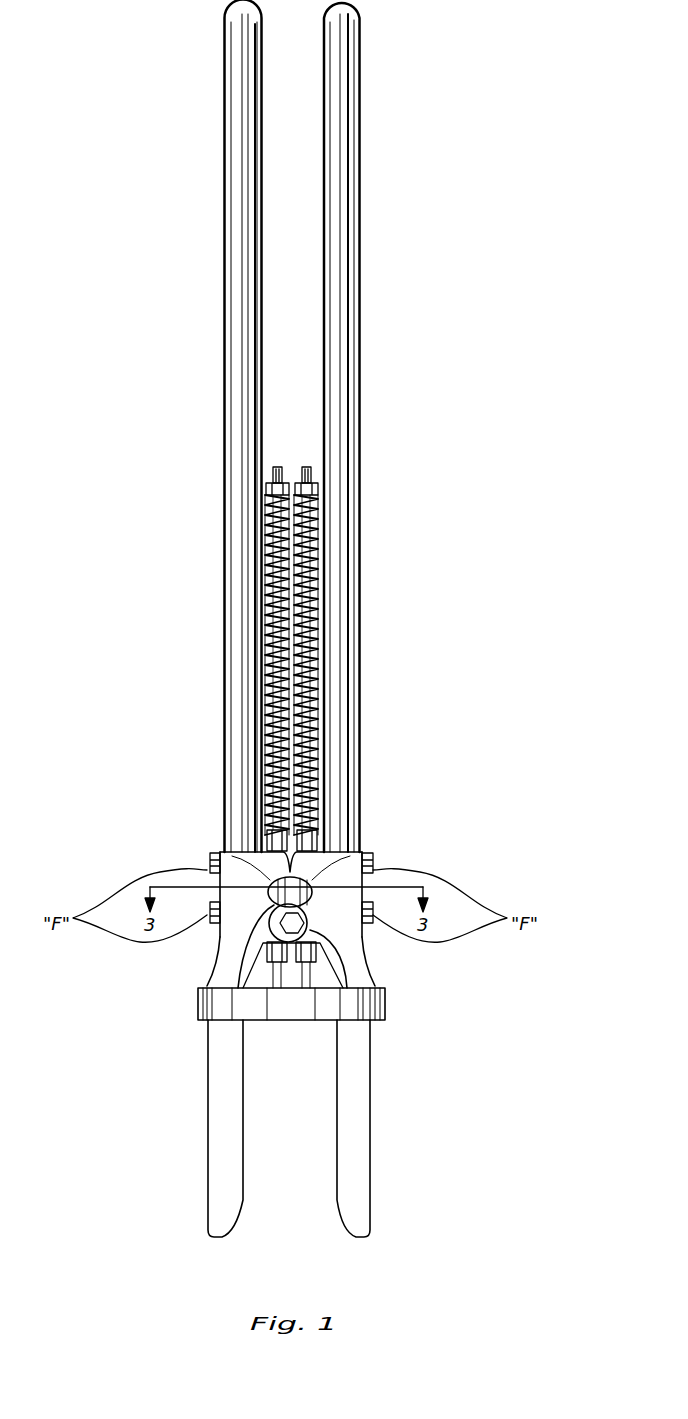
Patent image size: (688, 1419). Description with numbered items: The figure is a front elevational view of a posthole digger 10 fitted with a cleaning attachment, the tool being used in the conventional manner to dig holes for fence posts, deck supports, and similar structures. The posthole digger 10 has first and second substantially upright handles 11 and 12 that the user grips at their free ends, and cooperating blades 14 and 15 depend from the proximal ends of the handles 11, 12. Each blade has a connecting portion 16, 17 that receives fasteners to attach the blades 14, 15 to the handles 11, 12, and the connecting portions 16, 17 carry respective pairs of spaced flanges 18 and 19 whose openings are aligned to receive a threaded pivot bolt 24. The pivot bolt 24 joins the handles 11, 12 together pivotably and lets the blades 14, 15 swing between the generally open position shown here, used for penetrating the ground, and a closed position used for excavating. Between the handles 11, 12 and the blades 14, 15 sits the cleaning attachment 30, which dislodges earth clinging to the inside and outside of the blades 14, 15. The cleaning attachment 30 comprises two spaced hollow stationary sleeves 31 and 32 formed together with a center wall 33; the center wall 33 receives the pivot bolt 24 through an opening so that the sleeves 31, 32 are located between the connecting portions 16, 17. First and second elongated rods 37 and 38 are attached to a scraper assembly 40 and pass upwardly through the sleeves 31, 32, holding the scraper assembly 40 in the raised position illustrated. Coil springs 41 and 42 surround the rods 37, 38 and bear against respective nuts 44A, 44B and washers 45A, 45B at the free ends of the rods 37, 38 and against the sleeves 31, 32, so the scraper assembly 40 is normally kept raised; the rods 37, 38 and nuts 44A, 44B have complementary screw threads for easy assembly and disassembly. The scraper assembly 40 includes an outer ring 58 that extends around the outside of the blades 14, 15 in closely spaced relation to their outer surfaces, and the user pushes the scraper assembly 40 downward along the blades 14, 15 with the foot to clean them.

The posthole digger 10 is at (158, 324).
The first upright handle 11 is at (224, 128).
The second upright handle 12 is at (360, 145).
The blade 14 is at (225, 1130).
The blade 15 is at (353, 1113).
The connecting portion 16 is at (215, 944).
The connecting portion 17 is at (366, 940).
The spaced flanges 18 is at (222, 853).
The spaced flanges 19 is at (364, 853).
The threaded pivot bolt 24 is at (306, 928).
The cleaning attachment 30 is at (296, 383).
The hollow stationary sleeve 31 is at (266, 842).
The hollow stationary sleeve 32 is at (316, 843).
The center wall 33 is at (212, 978).
The first elongated rod 37 is at (272, 703).
The second elongated rod 38 is at (316, 657).
The scraper assembly 40 is at (288, 1067).
The coil spring 41 is at (270, 617).
The coil spring 42 is at (316, 592).
The nut 44A is at (272, 480).
The nut 44B is at (310, 475).
The washer 45A is at (268, 493).
The washer 45B is at (314, 494).
The outer ring 58 is at (225, 1008).